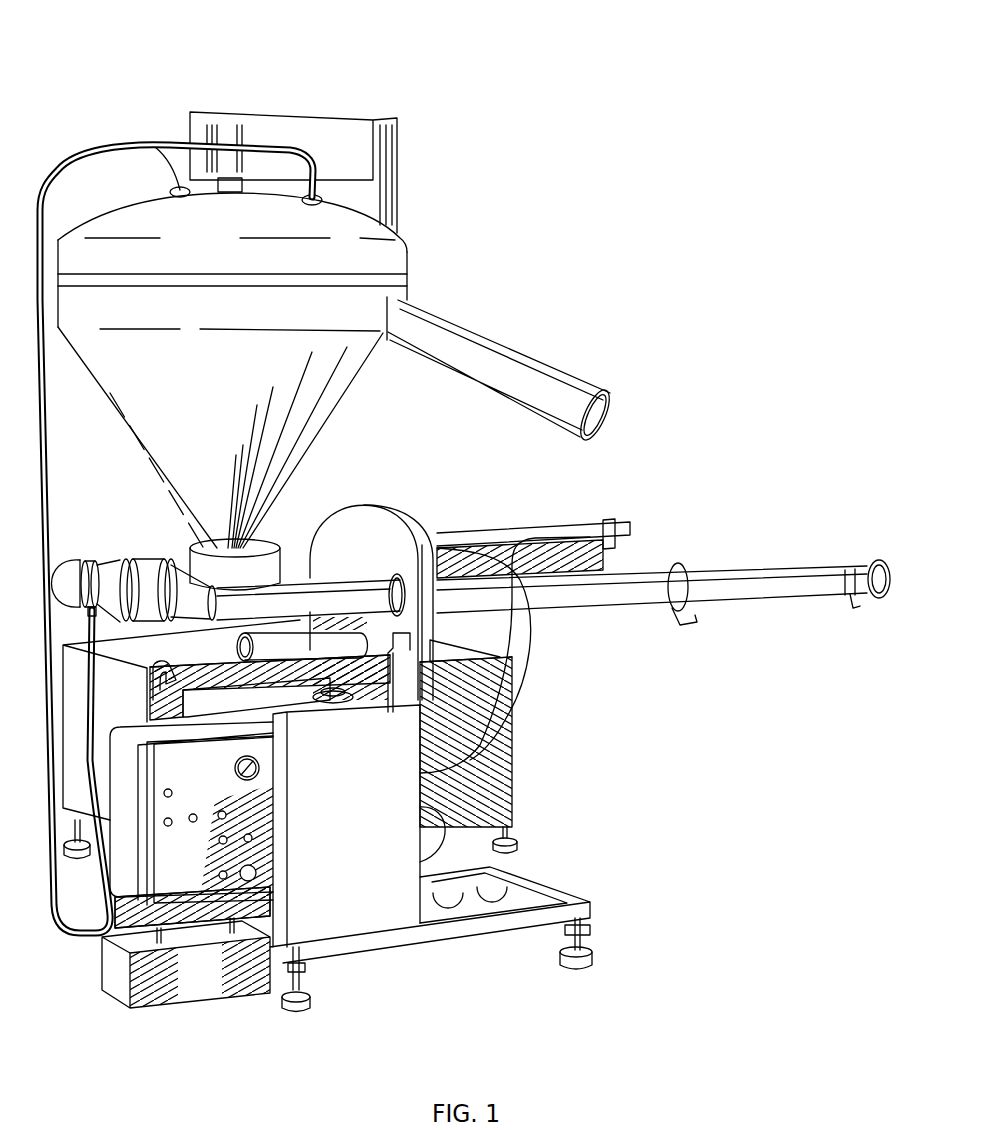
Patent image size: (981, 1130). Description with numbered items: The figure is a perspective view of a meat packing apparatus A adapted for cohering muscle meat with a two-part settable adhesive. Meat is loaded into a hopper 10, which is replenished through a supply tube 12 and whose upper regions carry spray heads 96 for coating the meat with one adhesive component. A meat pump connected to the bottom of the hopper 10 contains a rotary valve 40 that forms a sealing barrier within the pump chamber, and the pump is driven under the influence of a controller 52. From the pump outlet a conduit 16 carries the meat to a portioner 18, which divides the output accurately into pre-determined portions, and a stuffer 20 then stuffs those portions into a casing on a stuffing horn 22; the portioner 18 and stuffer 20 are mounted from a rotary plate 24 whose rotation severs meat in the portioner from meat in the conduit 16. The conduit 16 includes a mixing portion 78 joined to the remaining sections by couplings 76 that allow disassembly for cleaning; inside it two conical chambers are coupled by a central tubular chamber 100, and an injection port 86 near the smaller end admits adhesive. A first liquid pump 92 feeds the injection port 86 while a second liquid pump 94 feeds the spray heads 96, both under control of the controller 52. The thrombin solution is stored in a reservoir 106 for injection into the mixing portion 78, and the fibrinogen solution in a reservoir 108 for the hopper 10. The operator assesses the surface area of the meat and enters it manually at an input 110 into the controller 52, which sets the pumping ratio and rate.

The hopper 10 is at (337, 407).
The supply tube 12 is at (543, 372).
The conduit 16 is at (373, 560).
The portioner 18 is at (640, 580).
The stuffer 20 is at (500, 537).
The stuffing horn 22 is at (343, 560).
The rotary plate 24 is at (422, 490).
The rotary valve 40 is at (170, 192).
The controller 52 is at (280, 860).
The couplings 76 is at (318, 695).
The mixing portion 78 is at (110, 560).
The injection port 86 is at (100, 613).
The first liquid pump 92 is at (253, 945).
The second liquid pump 94 is at (181, 945).
The spray heads 96 is at (63, 937).
The central tubular chamber 100 is at (163, 717).
The reservoir 106 is at (233, 950).
The reservoir 108 is at (152, 1003).
The manual input 110 is at (176, 793).
The meat packing apparatus A is at (513, 258).